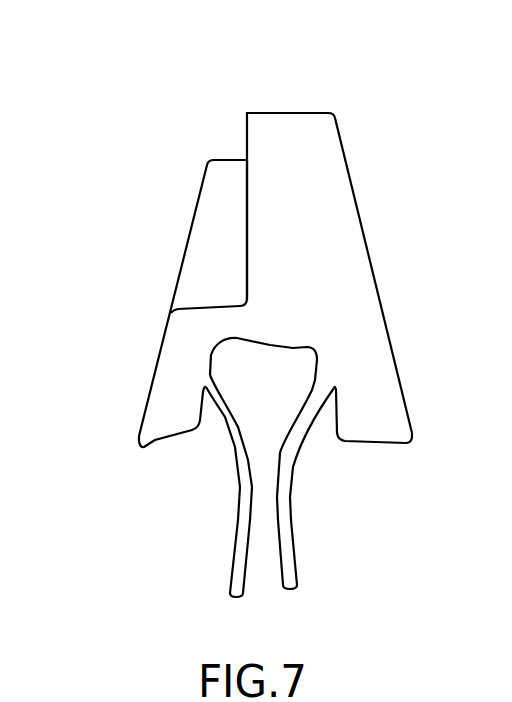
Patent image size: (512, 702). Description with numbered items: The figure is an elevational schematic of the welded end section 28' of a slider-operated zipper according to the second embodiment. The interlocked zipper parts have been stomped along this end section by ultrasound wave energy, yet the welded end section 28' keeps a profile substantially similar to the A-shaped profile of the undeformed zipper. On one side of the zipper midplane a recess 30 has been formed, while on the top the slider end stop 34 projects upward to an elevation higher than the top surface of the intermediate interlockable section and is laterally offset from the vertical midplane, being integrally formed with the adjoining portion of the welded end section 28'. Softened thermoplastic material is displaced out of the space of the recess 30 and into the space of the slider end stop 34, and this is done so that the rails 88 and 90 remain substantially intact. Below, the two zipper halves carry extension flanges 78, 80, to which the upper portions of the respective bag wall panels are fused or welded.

The slider end stop 34 is at (293, 113).
The recess 30 is at (197, 234).
The welded end section 28' is at (337, 275).
The rail 88 is at (382, 430).
The rail 90 is at (150, 437).
The extension flange 80 is at (238, 535).
The extension flange 78 is at (280, 531).